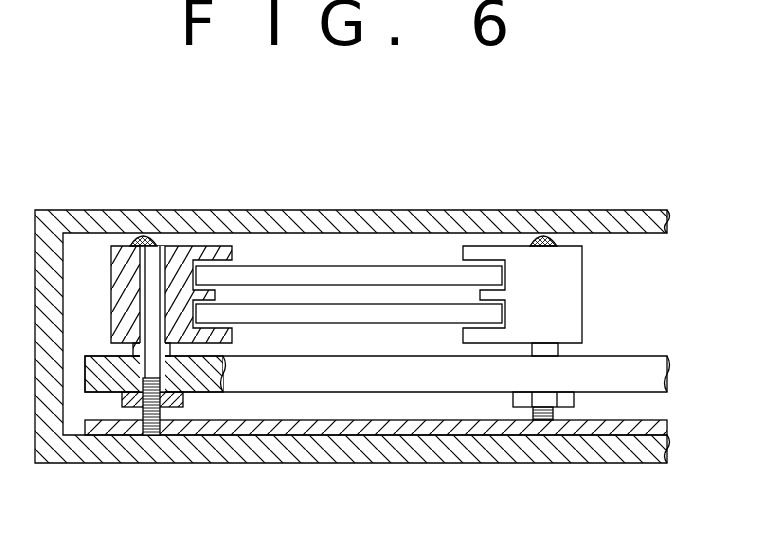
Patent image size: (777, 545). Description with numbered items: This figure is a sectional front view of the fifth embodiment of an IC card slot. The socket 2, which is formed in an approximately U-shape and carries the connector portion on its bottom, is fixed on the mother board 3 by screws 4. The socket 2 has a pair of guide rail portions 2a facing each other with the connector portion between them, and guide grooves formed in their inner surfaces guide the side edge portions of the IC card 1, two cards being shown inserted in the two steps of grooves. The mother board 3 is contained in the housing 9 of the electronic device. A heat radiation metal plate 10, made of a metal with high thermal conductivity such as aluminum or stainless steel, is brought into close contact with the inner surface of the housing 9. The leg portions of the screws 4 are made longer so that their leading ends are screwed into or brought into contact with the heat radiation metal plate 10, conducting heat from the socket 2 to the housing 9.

The IC card 1 is at (342, 270).
The socket 2 is at (180, 233).
The guide rail portion 2a is at (111, 262).
The mother board 3 is at (622, 385).
The screw 4 is at (150, 235).
The housing 9 is at (258, 210).
The heat radiation metal plate 10 is at (285, 433).